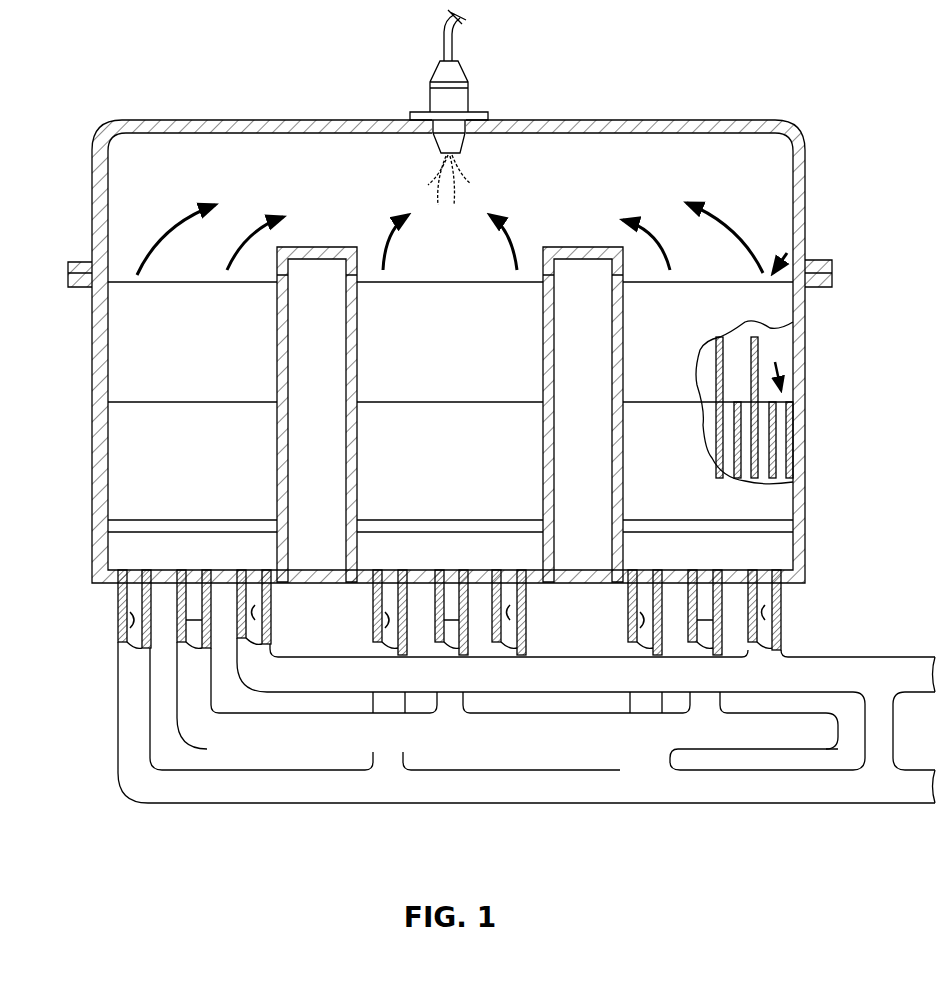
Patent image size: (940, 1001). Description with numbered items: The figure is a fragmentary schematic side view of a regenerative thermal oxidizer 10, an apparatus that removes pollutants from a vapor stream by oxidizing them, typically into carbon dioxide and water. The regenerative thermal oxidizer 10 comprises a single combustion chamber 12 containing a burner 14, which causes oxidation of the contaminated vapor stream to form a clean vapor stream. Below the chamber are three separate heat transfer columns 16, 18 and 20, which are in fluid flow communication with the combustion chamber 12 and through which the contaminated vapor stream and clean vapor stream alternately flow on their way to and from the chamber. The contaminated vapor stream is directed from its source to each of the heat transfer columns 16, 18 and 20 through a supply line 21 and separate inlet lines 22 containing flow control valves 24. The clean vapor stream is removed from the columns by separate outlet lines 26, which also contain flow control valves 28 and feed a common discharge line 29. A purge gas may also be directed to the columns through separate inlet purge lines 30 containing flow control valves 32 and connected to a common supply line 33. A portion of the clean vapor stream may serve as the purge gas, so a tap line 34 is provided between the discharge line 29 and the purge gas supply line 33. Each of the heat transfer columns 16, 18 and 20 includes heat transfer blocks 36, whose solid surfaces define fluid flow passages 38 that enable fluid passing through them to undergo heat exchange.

The regenerative thermal oxidizer 10 is at (362, 112).
The combustion chamber 12 is at (246, 162).
The burner 14 is at (470, 97).
The heat transfer column 16 is at (803, 214).
The heat transfer column 18 is at (473, 277).
The heat transfer column 20 is at (178, 277).
The supply line 21 is at (827, 735).
The inlet lines 22 is at (190, 692).
The flow control valves 24 is at (196, 620).
The outlet lines 26 is at (275, 598).
The flow control valves 28 is at (257, 612).
The discharge line 29 is at (830, 672).
The inlet purge lines 30 is at (130, 688).
The flow control valves 32 is at (130, 618).
The supply line 33 is at (720, 787).
The tap line 34 is at (878, 733).
The heat transfer blocks 36 is at (780, 437).
The fluid flow passages 38 is at (780, 362).